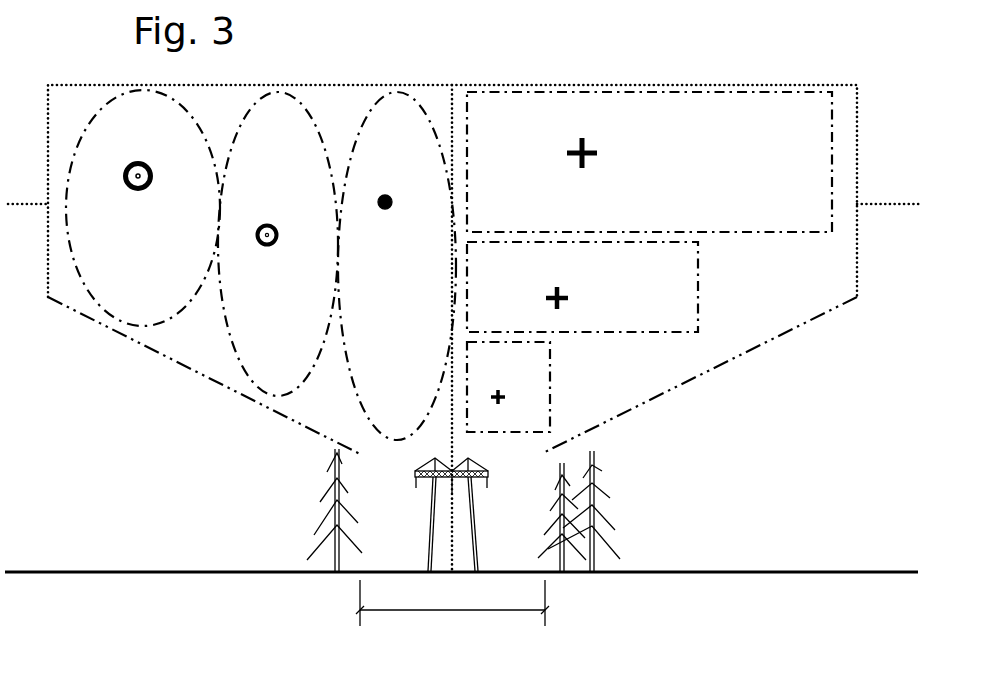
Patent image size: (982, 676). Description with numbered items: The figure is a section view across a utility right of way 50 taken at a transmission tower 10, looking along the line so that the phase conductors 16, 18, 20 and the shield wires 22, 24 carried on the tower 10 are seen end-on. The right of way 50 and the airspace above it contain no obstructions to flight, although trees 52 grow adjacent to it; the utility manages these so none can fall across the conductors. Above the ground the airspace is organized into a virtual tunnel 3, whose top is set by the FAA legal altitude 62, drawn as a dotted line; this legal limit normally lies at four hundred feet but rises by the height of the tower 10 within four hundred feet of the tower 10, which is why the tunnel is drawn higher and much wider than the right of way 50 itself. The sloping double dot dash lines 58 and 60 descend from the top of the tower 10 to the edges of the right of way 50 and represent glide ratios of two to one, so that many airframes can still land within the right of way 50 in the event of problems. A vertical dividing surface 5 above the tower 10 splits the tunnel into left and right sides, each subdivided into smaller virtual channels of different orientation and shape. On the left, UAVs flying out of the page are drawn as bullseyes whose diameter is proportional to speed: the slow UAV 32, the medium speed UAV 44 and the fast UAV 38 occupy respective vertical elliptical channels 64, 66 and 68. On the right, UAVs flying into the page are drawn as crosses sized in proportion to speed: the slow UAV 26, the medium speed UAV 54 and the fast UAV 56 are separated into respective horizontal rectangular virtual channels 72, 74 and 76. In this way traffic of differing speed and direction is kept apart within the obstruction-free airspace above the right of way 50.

The virtual tunnel 3 is at (432, 175).
The surface 5 is at (475, 328).
The tower 10 is at (466, 521).
The phase conductor 16 is at (396, 495).
The phase conductor 18 is at (414, 509).
The phase conductor 20 is at (507, 495).
The shield wire 22 is at (441, 452).
The shield wire 24 is at (487, 452).
The slow UAV 26 is at (515, 389).
The slow UAV 32 is at (405, 194).
The fast UAV 38 is at (160, 169).
The medium speed UAV 44 is at (288, 226).
The right of way 50 is at (452, 603).
The trees 52 is at (585, 500).
The medium speed UAV 54 is at (572, 289).
The fast UAV 56 is at (596, 144).
The glide ratio line 58 is at (204, 375).
The glide ratio line 60 is at (700, 375).
The FAA legal altitude 62 is at (889, 196).
The vertical ellipse virtual channel 64 is at (397, 242).
The vertical ellipse virtual channel 66 is at (285, 244).
The vertical ellipse virtual channel 68 is at (149, 208).
The horizontal rectangular virtual channel 72 is at (528, 387).
The horizontal rectangular virtual channel 74 is at (604, 287).
The horizontal rectangular virtual channel 76 is at (649, 162).